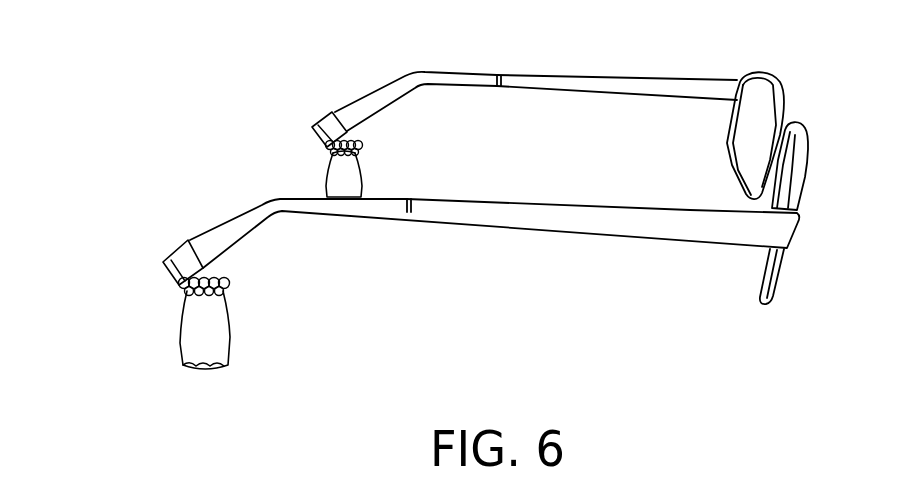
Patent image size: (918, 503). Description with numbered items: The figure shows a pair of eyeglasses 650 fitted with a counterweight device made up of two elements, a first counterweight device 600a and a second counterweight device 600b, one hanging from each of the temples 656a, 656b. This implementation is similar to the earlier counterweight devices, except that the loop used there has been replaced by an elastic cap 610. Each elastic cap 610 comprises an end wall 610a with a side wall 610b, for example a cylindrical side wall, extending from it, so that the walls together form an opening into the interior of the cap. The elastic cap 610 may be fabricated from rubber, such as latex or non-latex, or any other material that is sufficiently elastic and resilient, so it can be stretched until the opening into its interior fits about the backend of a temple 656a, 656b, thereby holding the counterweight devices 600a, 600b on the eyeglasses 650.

The pair of eyeglasses 650 is at (692, 86).
The temple 656a is at (553, 77).
The temple 656b is at (592, 220).
The elastic cap 610 is at (327, 118).
The end wall 610a is at (317, 140).
The side wall 610b is at (318, 130).
The counterweight device 600a is at (350, 180).
The counterweight device 600b is at (213, 337).